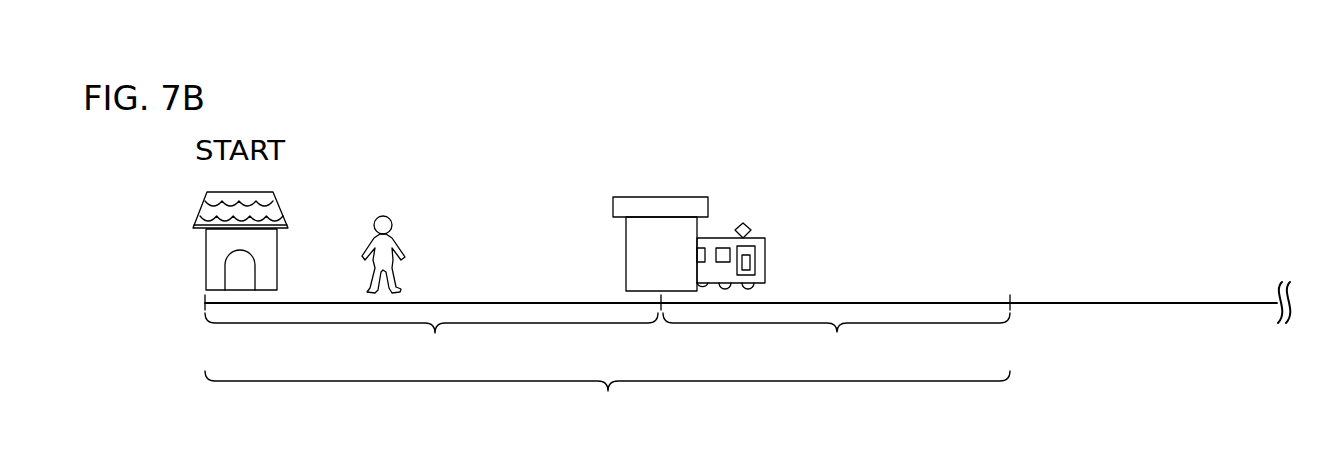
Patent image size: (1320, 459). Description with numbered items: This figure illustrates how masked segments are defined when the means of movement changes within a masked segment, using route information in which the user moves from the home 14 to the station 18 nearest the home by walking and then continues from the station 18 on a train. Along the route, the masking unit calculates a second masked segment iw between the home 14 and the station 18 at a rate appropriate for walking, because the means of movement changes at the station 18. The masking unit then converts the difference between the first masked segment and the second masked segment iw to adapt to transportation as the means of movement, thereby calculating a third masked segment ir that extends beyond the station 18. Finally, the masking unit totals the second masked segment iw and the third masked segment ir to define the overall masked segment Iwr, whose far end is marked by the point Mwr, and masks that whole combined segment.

The home 14 is at (278, 204).
The station nearest the home 18 is at (660, 197).
The maximum walking-and-riding distance Mwr is at (1010, 285).
The second masked segment iw is at (431, 339).
The third masked segment ir is at (836, 339).
The masked segment Iwr is at (607, 397).